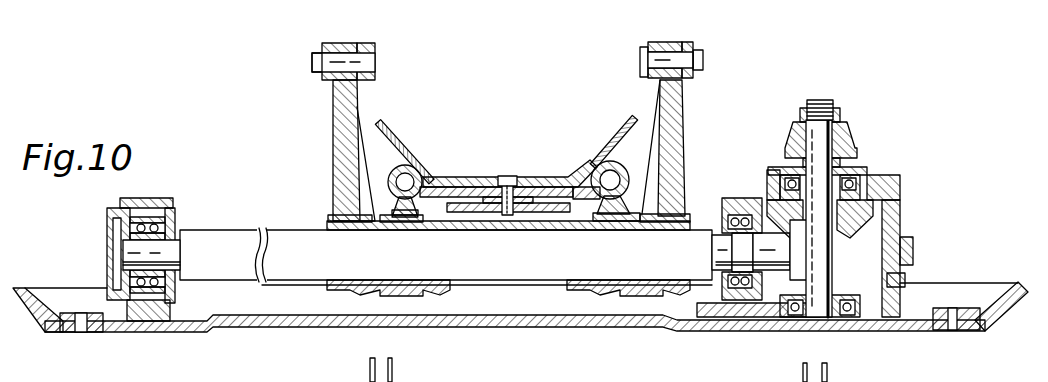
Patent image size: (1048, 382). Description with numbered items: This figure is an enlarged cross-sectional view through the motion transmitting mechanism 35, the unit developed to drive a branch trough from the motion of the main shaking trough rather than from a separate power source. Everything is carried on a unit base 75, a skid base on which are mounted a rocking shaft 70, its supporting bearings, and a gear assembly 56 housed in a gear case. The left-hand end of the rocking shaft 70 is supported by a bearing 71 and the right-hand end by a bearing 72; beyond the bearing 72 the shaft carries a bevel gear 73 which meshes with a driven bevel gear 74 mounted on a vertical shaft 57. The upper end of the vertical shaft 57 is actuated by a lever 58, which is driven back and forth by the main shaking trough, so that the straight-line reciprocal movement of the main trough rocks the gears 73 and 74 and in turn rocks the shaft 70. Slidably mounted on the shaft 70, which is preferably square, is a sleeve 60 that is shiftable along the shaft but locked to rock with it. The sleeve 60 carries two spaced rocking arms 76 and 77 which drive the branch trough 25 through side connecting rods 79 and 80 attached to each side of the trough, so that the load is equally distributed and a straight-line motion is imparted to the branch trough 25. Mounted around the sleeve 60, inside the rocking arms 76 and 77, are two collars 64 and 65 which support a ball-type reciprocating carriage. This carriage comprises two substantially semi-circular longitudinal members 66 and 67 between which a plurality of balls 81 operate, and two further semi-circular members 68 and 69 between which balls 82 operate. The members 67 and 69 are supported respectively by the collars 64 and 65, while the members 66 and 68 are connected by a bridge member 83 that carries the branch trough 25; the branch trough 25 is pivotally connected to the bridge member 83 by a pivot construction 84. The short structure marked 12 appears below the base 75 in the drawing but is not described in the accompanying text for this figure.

The frame 12 is at (375, 345).
The branch trough 25 is at (404, 142).
The motion transmitting mechanism 35 is at (499, 134).
The gear assembly 56 is at (897, 191).
The vertical shaft 57 is at (838, 265).
The lever 58 is at (851, 146).
The sleeve 60 is at (530, 223).
The collar 64 is at (410, 297).
The collar 65 is at (620, 297).
The semi-circular longitudinal member 66 is at (428, 172).
The semi-circular longitudinal member 67 is at (391, 178).
The semi-circular longitudinal member 68 is at (602, 164).
The semi-circular longitudinal member 69 is at (627, 184).
The rocking shaft 70 is at (287, 232).
The bearing 71 is at (144, 210).
The bearing 72 is at (742, 208).
The bevel gear 73 is at (776, 290).
The driven bevel gear 74 is at (855, 226).
The unit base 75 is at (930, 331).
The rocking arm 76 is at (685, 106).
The rocking arm 77 is at (333, 118).
The side connecting rod 79 is at (684, 42).
The side connecting rod 80 is at (354, 43).
The balls 81 is at (416, 209).
The balls 82 is at (623, 166).
The bridge member 83 is at (548, 189).
The pivot construction 84 is at (510, 177).